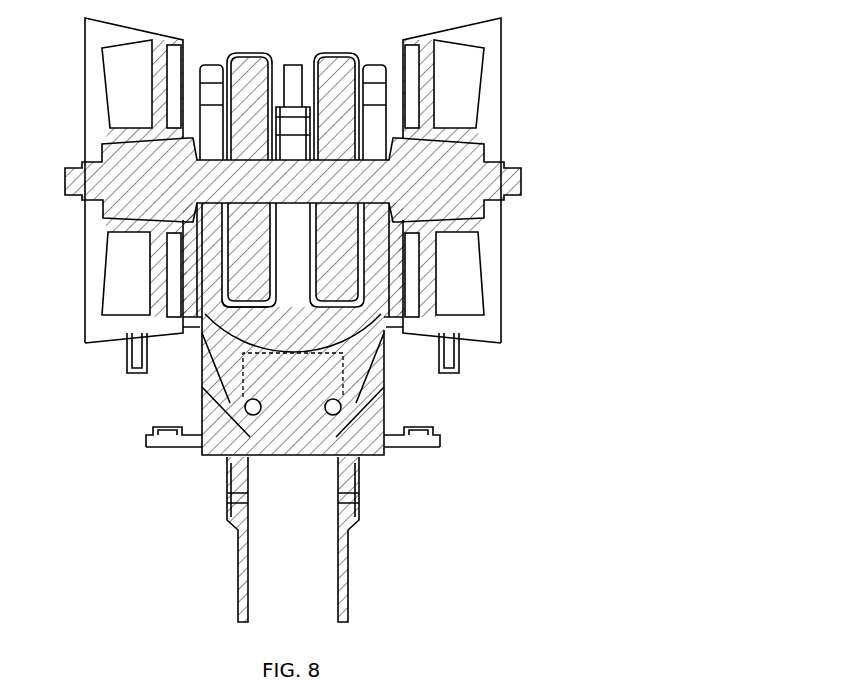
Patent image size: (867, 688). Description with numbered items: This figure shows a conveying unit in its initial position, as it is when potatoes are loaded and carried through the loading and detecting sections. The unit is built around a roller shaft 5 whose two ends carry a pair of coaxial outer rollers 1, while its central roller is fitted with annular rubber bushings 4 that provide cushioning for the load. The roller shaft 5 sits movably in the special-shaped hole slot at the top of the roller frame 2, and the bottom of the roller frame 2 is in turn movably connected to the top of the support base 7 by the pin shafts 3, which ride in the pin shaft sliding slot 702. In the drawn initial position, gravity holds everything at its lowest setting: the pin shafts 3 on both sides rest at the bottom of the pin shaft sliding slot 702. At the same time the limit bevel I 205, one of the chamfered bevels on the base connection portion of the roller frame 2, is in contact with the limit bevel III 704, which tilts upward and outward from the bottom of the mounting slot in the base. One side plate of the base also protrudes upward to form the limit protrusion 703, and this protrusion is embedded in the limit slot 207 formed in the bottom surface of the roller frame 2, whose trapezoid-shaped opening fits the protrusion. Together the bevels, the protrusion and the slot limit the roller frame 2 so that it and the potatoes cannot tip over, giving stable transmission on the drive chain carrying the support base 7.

The outer roller 1 is at (97, 95).
The roller frame 2 is at (238, 362).
The pin shaft 3 is at (335, 408).
The rubber bushing 4 is at (246, 50).
The roller shaft 5 is at (447, 192).
The support base 7 is at (350, 452).
The limit bevel I 205 is at (249, 429).
The limit slot 207 is at (238, 318).
The pin shaft sliding slot 702 is at (347, 377).
The limit protrusion 703 is at (236, 318).
The limit bevel III 704 is at (218, 404).